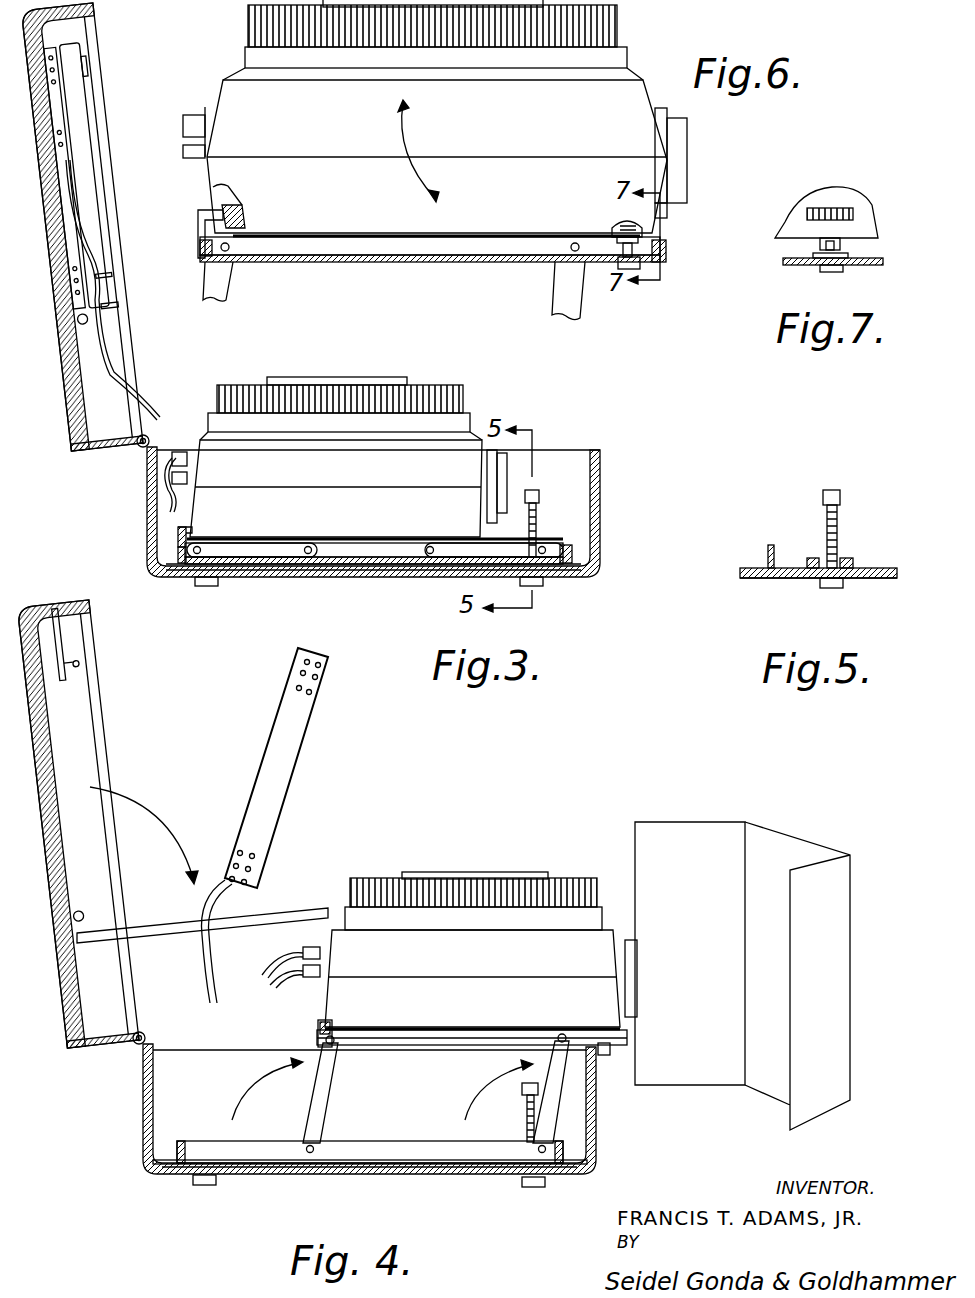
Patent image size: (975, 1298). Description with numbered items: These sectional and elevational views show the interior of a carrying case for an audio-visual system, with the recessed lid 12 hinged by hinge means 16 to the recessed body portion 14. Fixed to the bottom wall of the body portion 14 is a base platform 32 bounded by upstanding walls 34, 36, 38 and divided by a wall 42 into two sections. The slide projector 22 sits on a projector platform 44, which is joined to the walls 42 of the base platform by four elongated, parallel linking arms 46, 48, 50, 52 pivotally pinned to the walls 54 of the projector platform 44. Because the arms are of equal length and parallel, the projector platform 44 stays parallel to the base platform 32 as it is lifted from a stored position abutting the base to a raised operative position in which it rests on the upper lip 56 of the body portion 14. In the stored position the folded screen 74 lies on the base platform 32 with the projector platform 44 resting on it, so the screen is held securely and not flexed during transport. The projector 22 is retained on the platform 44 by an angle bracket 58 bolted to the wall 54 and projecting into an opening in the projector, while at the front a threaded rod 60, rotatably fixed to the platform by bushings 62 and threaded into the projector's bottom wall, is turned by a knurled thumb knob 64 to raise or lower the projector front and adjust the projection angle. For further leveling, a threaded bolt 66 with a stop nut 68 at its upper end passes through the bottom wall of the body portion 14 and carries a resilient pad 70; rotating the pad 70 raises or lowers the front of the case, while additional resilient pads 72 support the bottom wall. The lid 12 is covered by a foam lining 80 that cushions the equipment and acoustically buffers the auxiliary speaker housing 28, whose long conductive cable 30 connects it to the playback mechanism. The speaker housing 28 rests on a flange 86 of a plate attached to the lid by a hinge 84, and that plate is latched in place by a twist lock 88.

In FIG. 3, the recessed lid 12 is at (75, 452).
In FIG. 4, the recessed lid 12 is at (65, 1028).
In FIG. 3, the recessed body portion 14 is at (600, 505).
In FIG. 5, the recessed body portion 14 is at (757, 580).
In FIG. 4, the recessed body portion 14 is at (596, 1142).
In FIG. 3, the hinge means 16 is at (150, 438).
In FIG. 4, the hinge means 16 is at (145, 1036).
In FIG. 6, the slide projector 22 is at (228, 95).
In FIG. 3, the slide projector 22 is at (392, 474).
In FIG. 4, the slide projector 22 is at (478, 971).
In FIG. 4, the auxiliary speaker housing 28 is at (287, 757).
In FIG. 3, the conductive cable 30 is at (150, 405).
In FIG. 4, the conductive cable 30 is at (203, 903).
In FIG. 3, the base platform 32 is at (393, 578).
In FIG. 5, the base platform 32 is at (880, 568).
In FIG. 4, the base platform 32 is at (397, 1163).
In FIG. 3, the upstanding wall 34 is at (600, 565).
In FIG. 4, the upstanding wall 34 is at (596, 1160).
In FIG. 4, the upstanding wall 36 is at (253, 1150).
In FIG. 3, the upstanding wall 38 is at (178, 560).
In FIG. 4, the upstanding wall 38 is at (192, 1141).
In FIG. 5, the subdividing wall 42 is at (770, 548).
In FIG. 6, the projector platform 44 is at (387, 263).
In FIG. 7, the projector platform 44 is at (798, 265).
In FIG. 3, the projector platform 44 is at (346, 572).
In FIG. 4, the projector platform 44 is at (390, 1045).
In FIG. 3, the linking arm 46 is at (462, 543).
In FIG. 4, the linking arm 46 is at (548, 1100).
In FIG. 3, the linking arm 48 is at (252, 542).
In FIG. 4, the linking arm 48 is at (322, 1097).
In FIG. 6, the linking arm 50 is at (572, 305).
In FIG. 6, the linking arm 52 is at (230, 283).
In FIG. 6, the wall of projector platform 54 is at (205, 249).
In FIG. 3, the wall of projector platform 54 is at (350, 543).
In FIG. 4, the wall of projector platform 54 is at (467, 1045).
In FIG. 3, the upper lip 56 is at (597, 450).
In FIG. 4, the upper lip 56 is at (612, 1043).
In FIG. 6, the angle bracket 58 is at (200, 222).
In FIG. 3, the angle bracket 58 is at (178, 531).
In FIG. 4, the angle bracket 58 is at (318, 1030).
In FIG. 6, the threaded rod 60 is at (620, 228).
In FIG. 7, the threaded rod 60 is at (845, 252).
In FIG. 6, the bushings 62 is at (640, 272).
In FIG. 7, the bushings 62 is at (843, 272).
In FIG. 7, the knurled thumb knob 64 is at (837, 208).
In FIG. 3, the threaded bolt 66 is at (537, 519).
In FIG. 5, the threaded bolt 66 is at (838, 522).
In FIG. 4, the threaded bolt 66 is at (528, 1118).
In FIG. 3, the stop nut 68 is at (539, 497).
In FIG. 5, the stop nut 68 is at (840, 497).
In FIG. 4, the stop nut 68 is at (527, 1095).
In FIG. 3, the resilient pad 70 is at (543, 582).
In FIG. 5, the resilient pad 70 is at (838, 590).
In FIG. 4, the resilient pad 70 is at (530, 1185).
In FIG. 3, the resilient pads 72 is at (205, 588).
In FIG. 4, the resilient pads 72 is at (205, 1187).
In FIG. 3, the screen 74 is at (505, 565).
In FIG. 4, the screen 74 is at (838, 948).
In FIG. 3, the lining 80 is at (88, 413).
In FIG. 4, the lining 80 is at (55, 733).
In FIG. 3, the hinge 84 is at (95, 318).
In FIG. 4, the hinge 84 is at (74, 908).
In FIG. 4, the flange 86 is at (80, 930).
In FIG. 4, the twist lock 88 is at (95, 665).